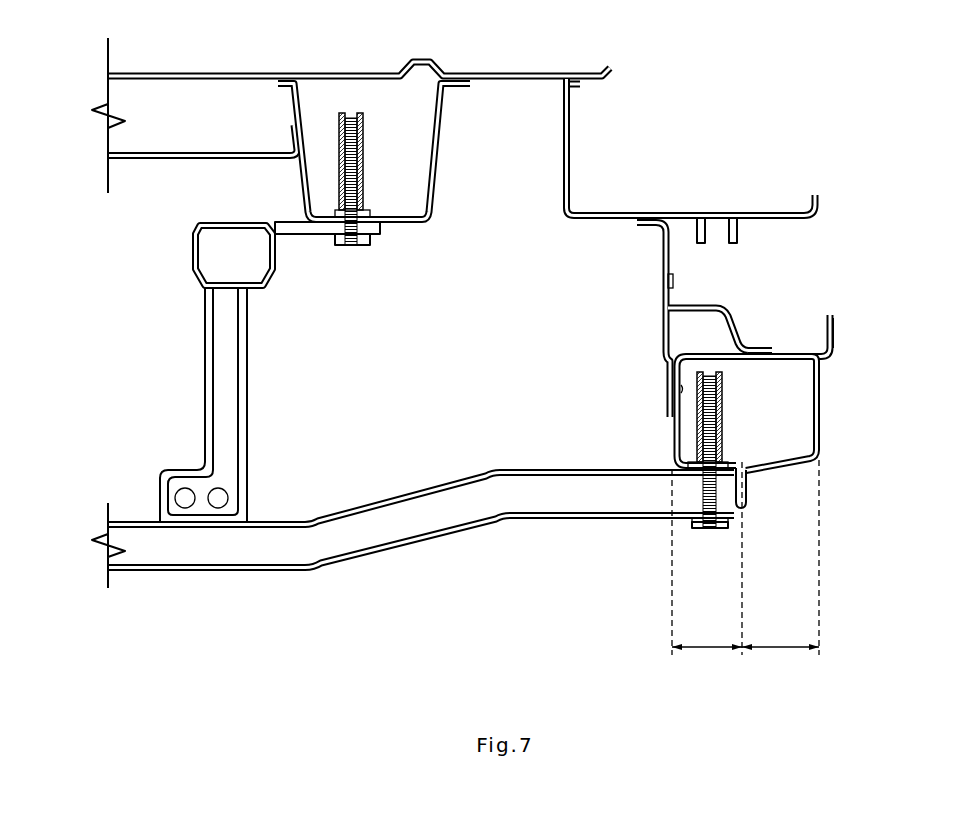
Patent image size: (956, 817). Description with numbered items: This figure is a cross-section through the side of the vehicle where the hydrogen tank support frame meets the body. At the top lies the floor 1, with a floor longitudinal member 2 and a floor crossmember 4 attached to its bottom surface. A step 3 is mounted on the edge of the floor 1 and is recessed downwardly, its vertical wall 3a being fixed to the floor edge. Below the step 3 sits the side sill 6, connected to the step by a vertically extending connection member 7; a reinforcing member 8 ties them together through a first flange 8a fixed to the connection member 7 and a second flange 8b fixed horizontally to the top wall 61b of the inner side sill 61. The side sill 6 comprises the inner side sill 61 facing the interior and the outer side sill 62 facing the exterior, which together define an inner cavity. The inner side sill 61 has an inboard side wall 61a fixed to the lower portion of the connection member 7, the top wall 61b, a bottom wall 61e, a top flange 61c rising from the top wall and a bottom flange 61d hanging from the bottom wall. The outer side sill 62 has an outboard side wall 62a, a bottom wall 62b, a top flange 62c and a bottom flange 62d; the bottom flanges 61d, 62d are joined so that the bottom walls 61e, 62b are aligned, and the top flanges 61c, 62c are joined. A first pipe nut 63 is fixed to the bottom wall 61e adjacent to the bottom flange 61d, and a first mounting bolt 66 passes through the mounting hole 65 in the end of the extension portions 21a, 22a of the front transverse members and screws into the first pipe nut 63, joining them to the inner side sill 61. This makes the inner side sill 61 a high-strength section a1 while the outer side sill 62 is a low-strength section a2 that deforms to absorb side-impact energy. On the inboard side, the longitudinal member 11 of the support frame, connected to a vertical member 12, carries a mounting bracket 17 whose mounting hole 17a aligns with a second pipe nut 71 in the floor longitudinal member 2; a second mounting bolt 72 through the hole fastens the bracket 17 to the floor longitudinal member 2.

The floor 1 is at (188, 72).
The floor longitudinal member 2 is at (436, 150).
The step 3 is at (768, 212).
The vertical wall 3a is at (572, 146).
The floor crossmember 4 is at (187, 160).
The side sill 6 is at (832, 392).
The connection member 7 is at (662, 327).
The reinforcing member 8 is at (738, 330).
The first flange 8a is at (673, 287).
The second flange 8b is at (760, 348).
The longitudinal member 11 is at (193, 256).
The vertical member 12 is at (248, 405).
The mounting bracket 17 is at (293, 236).
The mounting hole 17a is at (341, 246).
The first extension portion 21a is at (253, 571).
The second extension portion 22a is at (413, 551).
The inner side sill 61 is at (656, 449).
The inboard side wall 61a is at (678, 390).
The top wall 61b is at (710, 352).
The top flange 61c is at (823, 326).
The bottom flange 61d is at (744, 505).
The bottom wall 61e is at (693, 475).
The outer side sill 62 is at (840, 445).
The outboard side wall 62a is at (822, 418).
The bottom wall 62b is at (782, 468).
The top flange 62c is at (835, 328).
The bottom flange 62d is at (748, 498).
The first pipe nut 63 is at (724, 415).
The mounting hole 65 is at (696, 528).
The first mounting bolt 66 is at (715, 530).
The second pipe nut 71 is at (365, 160).
The second mounting bolt 72 is at (360, 246).
The high-strength section a1 is at (707, 558).
The low-strength section a2 is at (780, 557).